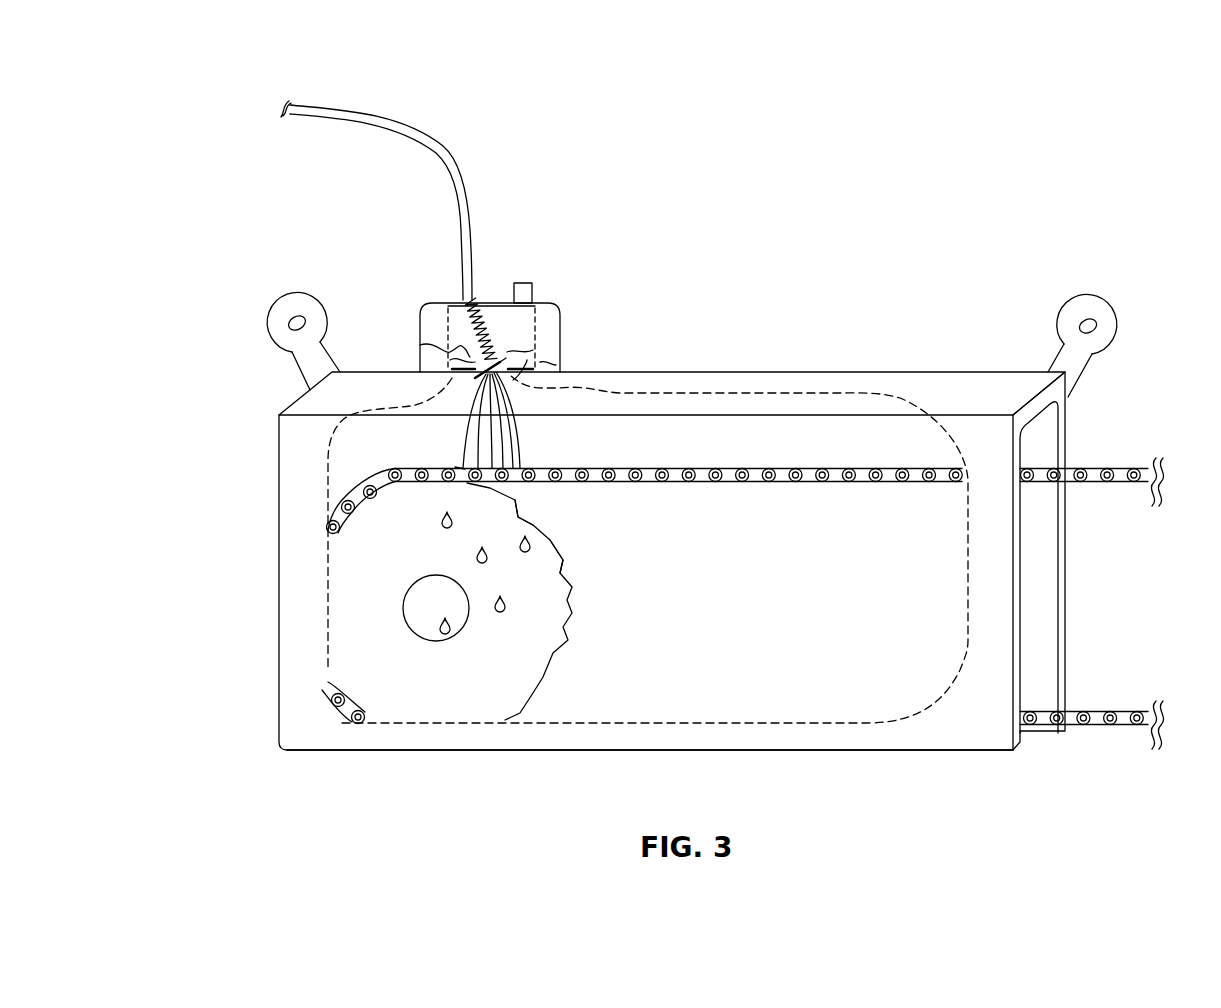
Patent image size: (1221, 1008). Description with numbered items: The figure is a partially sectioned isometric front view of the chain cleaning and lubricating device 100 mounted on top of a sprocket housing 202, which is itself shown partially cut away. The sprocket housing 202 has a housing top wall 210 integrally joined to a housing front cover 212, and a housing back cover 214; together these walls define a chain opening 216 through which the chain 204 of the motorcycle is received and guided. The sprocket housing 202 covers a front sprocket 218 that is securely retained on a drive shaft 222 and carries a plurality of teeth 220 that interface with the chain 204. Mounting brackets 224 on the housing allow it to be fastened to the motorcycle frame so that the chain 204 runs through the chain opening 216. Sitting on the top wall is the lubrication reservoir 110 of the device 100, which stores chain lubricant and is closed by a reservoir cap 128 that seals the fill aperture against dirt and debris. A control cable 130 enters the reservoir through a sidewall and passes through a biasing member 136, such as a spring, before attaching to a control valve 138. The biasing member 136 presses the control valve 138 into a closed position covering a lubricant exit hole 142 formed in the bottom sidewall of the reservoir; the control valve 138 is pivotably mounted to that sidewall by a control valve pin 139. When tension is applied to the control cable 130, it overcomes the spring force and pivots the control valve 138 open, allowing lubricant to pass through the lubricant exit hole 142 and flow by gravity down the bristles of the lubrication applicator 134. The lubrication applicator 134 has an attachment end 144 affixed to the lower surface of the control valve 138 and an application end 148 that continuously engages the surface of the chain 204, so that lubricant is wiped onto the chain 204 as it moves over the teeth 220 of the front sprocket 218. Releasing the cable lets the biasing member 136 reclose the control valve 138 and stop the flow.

The chain cleaning and lubricating device 100 is at (406, 294).
The lubrication reservoir 110 is at (560, 312).
The reservoir cap 128 is at (532, 281).
The control cable 130 is at (445, 140).
The lubrication applicator 134 is at (530, 425).
The biasing member 136 is at (487, 312).
The control valve 138 is at (477, 400).
The control valve pin 139 is at (463, 348).
The lubricant exit hole 142 is at (515, 383).
The attachment end 144 is at (520, 355).
The application end 148 is at (451, 463).
The sprocket housing 202 is at (279, 617).
The chain 204 is at (803, 460).
The housing top wall 210 is at (830, 380).
The housing front cover 212 is at (312, 728).
The housing back cover 214 is at (1033, 663).
The chain opening 216 is at (1040, 450).
The front sprocket 218 is at (537, 642).
The teeth 220 is at (543, 513).
The drive shaft 222 is at (452, 600).
The mounting brackets 224 is at (272, 310).